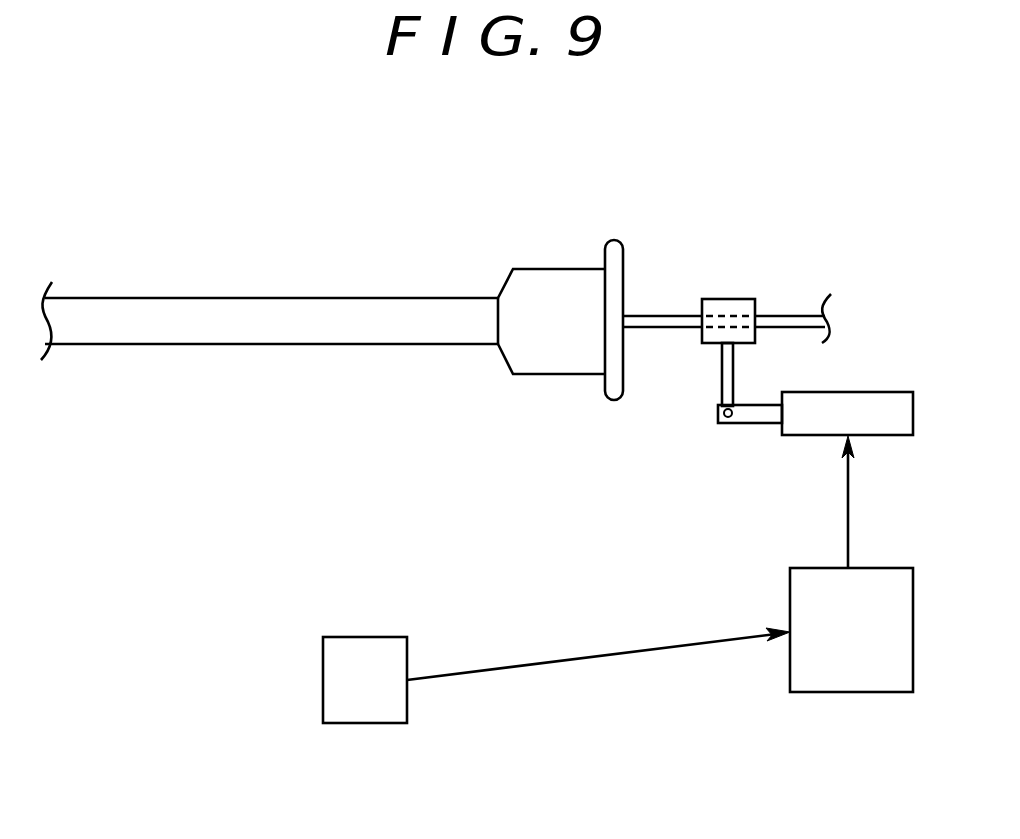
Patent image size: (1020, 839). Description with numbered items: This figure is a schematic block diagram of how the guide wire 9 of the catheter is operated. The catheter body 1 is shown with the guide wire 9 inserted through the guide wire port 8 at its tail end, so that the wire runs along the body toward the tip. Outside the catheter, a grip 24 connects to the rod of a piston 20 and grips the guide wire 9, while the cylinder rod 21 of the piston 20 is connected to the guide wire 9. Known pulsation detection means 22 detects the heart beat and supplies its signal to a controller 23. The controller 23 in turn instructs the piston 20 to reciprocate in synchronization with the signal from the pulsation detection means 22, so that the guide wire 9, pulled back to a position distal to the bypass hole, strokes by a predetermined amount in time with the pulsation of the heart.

The catheter body 1 is at (294, 298).
The guide wire port 8 is at (561, 268).
The guide wire 9 is at (794, 316).
The piston 20 is at (878, 392).
The cylinder rod 21 is at (750, 424).
The pulsation detection means 22 is at (363, 723).
The controller 23 is at (851, 692).
The grip 24 is at (730, 299).